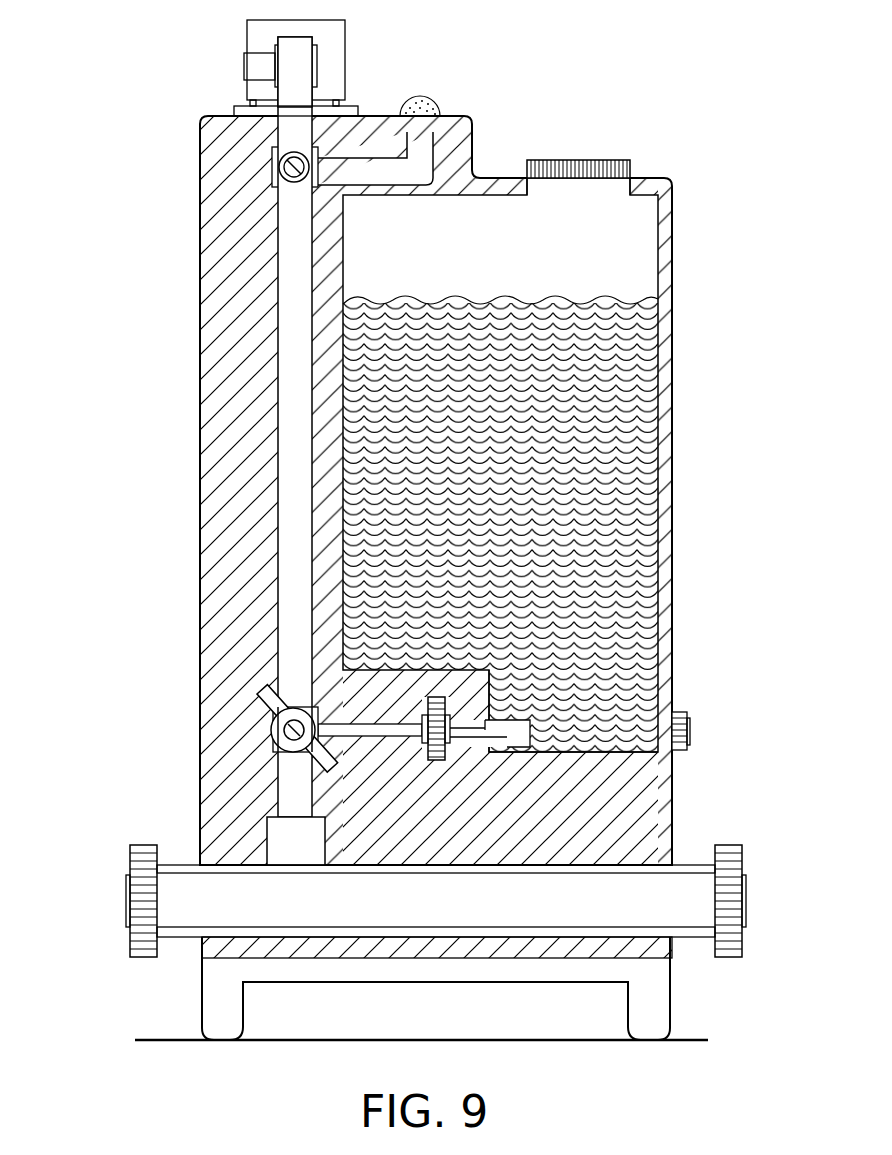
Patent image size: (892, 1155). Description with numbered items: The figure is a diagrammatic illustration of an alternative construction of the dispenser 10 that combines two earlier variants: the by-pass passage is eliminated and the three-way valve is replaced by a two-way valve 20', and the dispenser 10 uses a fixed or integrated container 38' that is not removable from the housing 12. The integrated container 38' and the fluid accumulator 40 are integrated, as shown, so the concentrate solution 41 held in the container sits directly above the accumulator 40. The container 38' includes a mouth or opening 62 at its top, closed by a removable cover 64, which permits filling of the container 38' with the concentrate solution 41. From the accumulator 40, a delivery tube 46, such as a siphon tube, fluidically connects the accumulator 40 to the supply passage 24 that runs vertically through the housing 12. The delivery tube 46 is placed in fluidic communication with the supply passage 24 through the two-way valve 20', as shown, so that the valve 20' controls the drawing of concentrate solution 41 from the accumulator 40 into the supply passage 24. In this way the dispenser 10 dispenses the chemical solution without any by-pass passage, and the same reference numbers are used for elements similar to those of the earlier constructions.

The dispenser 10 is at (698, 104).
The housing 12 is at (200, 490).
The supply passage 24 is at (295, 625).
The two-way valve 20' is at (209, 728).
The delivery tube 46 is at (367, 730).
The fluid accumulator 40 is at (633, 695).
The integrated container 38' is at (567, 465).
The concentrate solution 41 is at (625, 358).
The opening 62 is at (618, 190).
The removable cover 64 is at (588, 160).